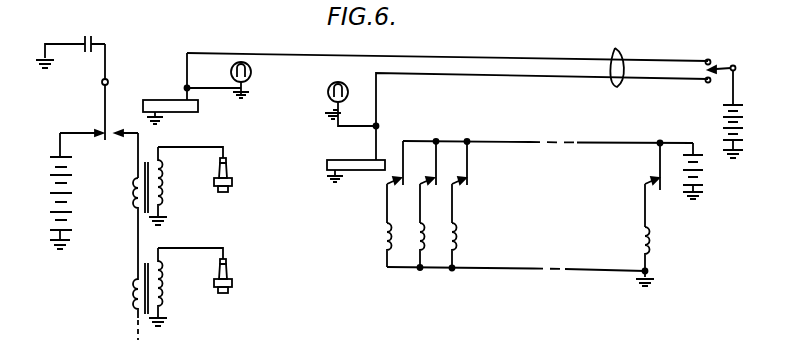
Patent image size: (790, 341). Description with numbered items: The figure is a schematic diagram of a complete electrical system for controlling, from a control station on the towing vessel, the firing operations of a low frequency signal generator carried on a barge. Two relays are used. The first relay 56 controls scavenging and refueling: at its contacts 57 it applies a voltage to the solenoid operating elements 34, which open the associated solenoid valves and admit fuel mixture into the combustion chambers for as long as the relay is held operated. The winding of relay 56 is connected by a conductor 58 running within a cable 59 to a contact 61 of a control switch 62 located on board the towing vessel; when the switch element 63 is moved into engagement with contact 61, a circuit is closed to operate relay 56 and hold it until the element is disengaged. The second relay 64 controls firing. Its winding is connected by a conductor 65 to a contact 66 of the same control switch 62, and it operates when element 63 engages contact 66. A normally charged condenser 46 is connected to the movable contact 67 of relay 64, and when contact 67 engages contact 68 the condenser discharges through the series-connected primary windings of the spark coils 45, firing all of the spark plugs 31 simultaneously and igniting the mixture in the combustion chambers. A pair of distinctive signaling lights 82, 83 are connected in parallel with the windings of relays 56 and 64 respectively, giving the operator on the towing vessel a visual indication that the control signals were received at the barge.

The spark plugs 31 is at (230, 180).
The solenoid operating elements 34 is at (384, 237).
The spark coils 45 is at (140, 173).
The condenser 46 is at (96, 45).
The first relay 56 is at (358, 170).
The contacts 57 is at (392, 184).
The conductor 58 is at (478, 77).
The cable 59 is at (615, 50).
The contact 61 is at (706, 83).
The control switch 62 is at (739, 64).
The switch element 63 is at (732, 65).
The second relay 64 is at (171, 100).
The conductor 65 is at (230, 53).
The contact 66 is at (706, 60).
The movable contact 67 is at (104, 107).
The contact 68 is at (121, 131).
The light 82 is at (334, 84).
The light 83 is at (252, 70).